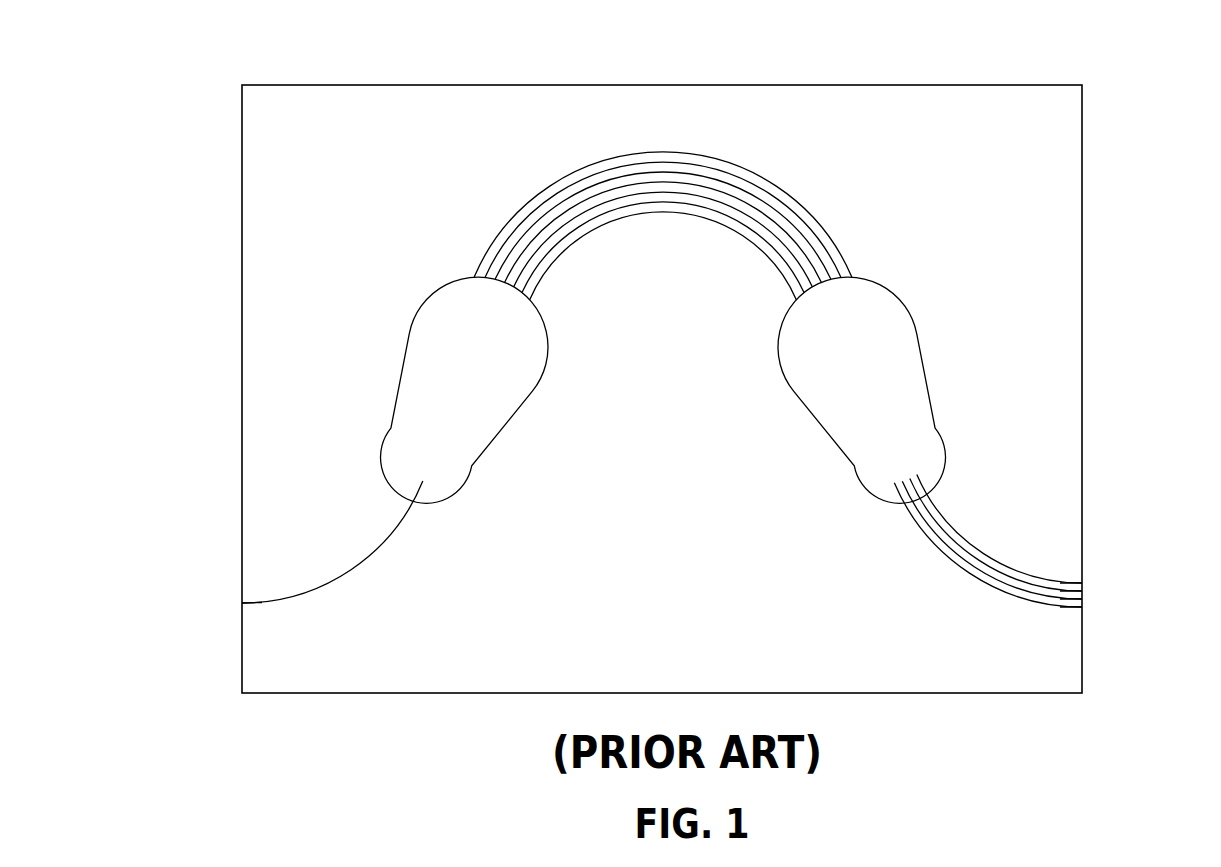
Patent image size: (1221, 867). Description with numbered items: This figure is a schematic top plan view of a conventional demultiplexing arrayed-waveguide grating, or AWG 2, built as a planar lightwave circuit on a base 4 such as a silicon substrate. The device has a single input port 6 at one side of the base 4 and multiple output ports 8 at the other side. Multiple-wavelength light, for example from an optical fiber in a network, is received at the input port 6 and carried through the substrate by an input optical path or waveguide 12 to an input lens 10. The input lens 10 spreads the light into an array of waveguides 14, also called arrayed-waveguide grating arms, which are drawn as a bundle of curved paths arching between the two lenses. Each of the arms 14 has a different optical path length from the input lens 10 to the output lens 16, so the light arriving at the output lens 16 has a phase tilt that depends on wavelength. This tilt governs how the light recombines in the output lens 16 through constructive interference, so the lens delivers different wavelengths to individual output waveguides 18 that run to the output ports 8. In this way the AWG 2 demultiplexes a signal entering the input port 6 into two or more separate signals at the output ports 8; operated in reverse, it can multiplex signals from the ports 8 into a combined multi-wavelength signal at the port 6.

The demultiplexing AWG 2 is at (158, 144).
The base 4 is at (293, 85).
The input port 6 is at (242, 602).
The output ports 8 is at (1116, 582).
The input lens 10 is at (410, 338).
The input optical path or waveguide 12 is at (337, 578).
The array of waveguides 14 is at (838, 203).
The output lens 16 is at (915, 338).
The output waveguides 18 is at (908, 588).